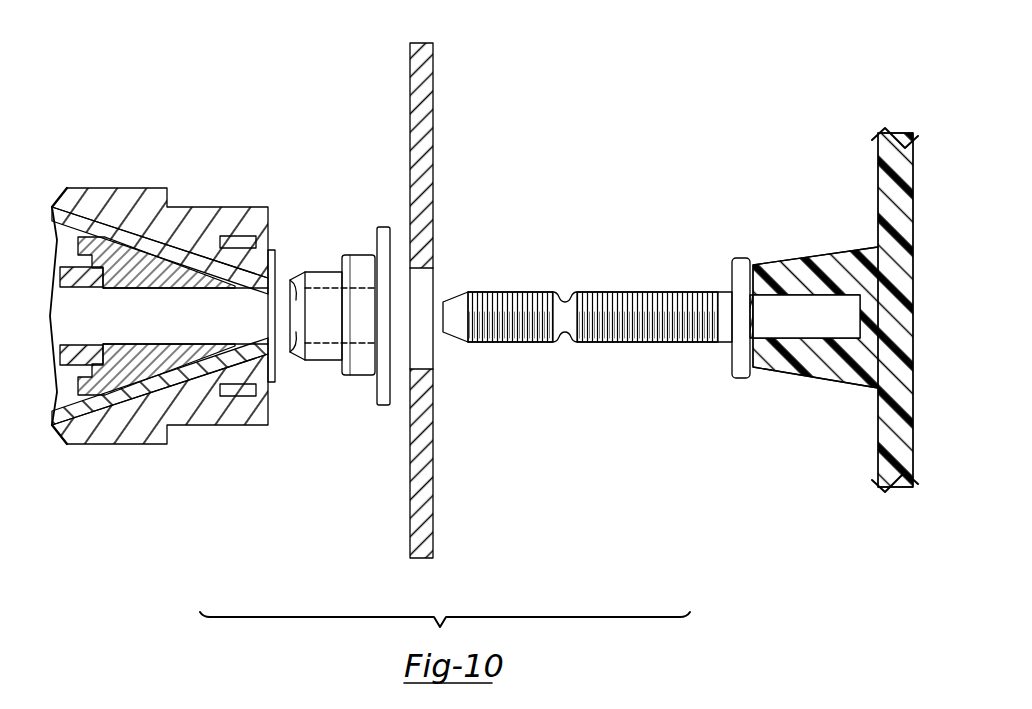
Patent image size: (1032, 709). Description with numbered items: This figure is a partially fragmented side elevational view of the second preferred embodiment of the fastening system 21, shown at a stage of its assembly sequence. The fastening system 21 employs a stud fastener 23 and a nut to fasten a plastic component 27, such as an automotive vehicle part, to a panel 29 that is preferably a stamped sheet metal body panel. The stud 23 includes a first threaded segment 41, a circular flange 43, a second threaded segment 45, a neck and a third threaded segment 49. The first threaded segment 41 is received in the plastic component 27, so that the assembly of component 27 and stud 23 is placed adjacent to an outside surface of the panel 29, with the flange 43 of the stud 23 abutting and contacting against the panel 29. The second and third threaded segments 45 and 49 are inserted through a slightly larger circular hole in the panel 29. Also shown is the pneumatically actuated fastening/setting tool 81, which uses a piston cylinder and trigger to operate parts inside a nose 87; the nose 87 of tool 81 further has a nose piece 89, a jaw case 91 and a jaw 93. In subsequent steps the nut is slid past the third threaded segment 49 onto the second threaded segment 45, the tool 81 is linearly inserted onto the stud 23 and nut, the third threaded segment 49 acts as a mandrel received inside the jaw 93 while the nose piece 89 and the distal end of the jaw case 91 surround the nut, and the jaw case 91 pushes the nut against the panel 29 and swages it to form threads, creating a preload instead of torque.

The fastening system 21 is at (107, 142).
The tool 81 is at (198, 138).
The nose 87 is at (143, 437).
The jaw case 91 is at (208, 243).
The jaw 93 is at (137, 253).
The nose piece 89 is at (268, 233).
The panel 29 is at (425, 127).
The stud fastener 23 is at (651, 311).
The third threaded segment 49 is at (493, 300).
The second threaded segment 45 is at (637, 343).
The circular flange 43 is at (742, 258).
The first threaded segment 41 is at (847, 294).
The plastic component 27 is at (883, 418).